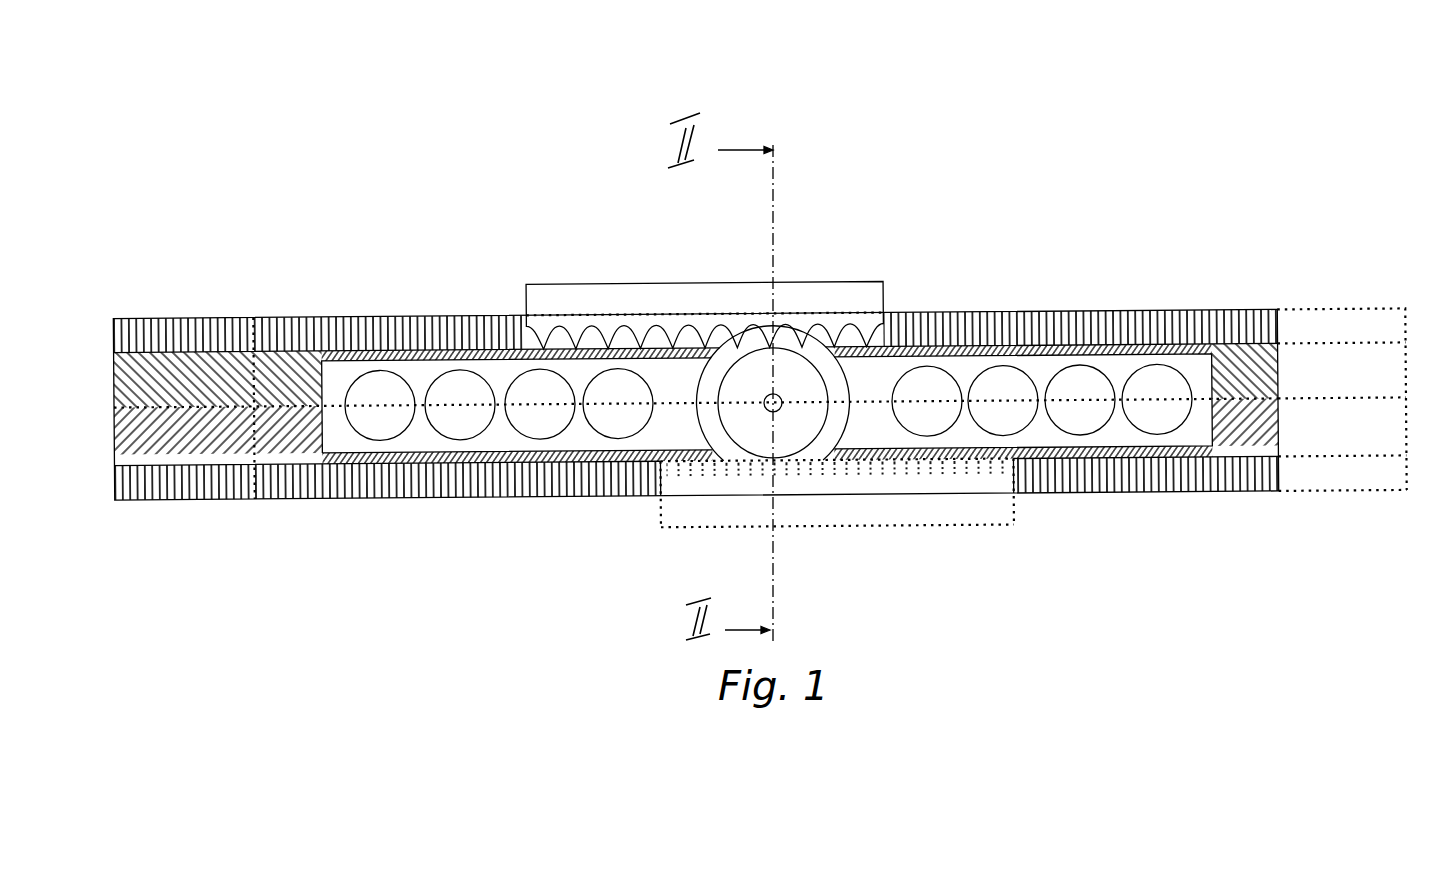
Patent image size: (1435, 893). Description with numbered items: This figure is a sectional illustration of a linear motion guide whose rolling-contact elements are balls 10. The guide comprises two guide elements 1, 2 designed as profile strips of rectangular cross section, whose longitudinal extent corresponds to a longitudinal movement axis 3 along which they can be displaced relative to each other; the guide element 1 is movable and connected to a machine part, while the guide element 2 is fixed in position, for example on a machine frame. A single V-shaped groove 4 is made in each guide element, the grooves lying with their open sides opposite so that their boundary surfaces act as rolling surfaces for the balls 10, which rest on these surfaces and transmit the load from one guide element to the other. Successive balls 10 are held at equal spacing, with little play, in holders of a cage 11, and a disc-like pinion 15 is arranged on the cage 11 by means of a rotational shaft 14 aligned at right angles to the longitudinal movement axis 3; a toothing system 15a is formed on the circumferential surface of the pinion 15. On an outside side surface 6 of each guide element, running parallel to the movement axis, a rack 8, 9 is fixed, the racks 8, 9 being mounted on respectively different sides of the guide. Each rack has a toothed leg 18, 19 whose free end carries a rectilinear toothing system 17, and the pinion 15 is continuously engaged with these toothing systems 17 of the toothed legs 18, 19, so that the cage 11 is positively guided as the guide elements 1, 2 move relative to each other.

The guide element 1 is at (1353, 306).
The guide element 2 is at (1067, 305).
The longitudinal movement axis 3 is at (1325, 405).
The V-shaped groove 4 is at (943, 308).
The outside side surface 6 is at (1355, 490).
The rack 8 is at (940, 535).
The rack 9 is at (560, 280).
The balls 10 is at (412, 318).
The cage 11 is at (1167, 497).
The rotational shaft 14 is at (787, 420).
The pinion 15 is at (630, 498).
The toothing system 15a is at (860, 387).
The toothing systems 17 is at (497, 317).
The toothed leg 18 is at (1017, 505).
The toothed leg 19 is at (527, 316).